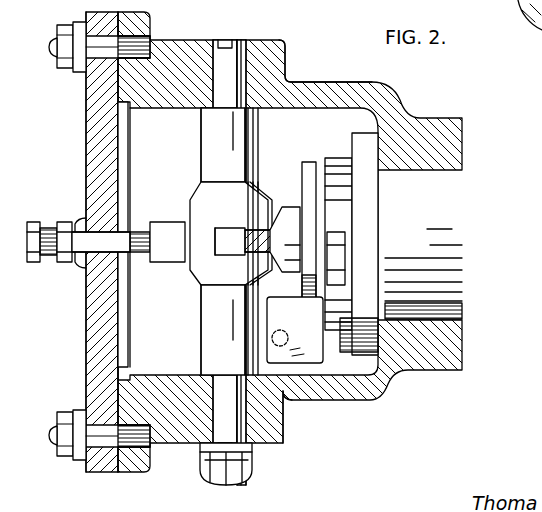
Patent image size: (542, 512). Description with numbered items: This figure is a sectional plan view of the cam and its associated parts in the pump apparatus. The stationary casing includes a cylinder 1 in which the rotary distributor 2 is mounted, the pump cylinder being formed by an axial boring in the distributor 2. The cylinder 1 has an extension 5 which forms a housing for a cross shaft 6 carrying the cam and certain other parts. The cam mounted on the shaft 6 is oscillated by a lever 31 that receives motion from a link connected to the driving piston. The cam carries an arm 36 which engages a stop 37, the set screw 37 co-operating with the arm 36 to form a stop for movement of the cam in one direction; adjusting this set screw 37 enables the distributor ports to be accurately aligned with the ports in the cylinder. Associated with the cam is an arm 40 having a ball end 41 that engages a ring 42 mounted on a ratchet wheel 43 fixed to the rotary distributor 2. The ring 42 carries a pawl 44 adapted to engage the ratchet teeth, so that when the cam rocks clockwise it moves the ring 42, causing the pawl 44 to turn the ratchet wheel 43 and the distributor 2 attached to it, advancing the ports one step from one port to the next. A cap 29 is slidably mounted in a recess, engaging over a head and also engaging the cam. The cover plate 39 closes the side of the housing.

The cylinder 1 is at (452, 145).
The rotary distributor 2 is at (452, 229).
The extension 5 is at (282, 60).
The cross shaft 6 is at (228, 55).
The cap 29 is at (292, 226).
The lever 31 is at (240, 241).
The arm 36 is at (165, 236).
The stop 37 is at (52, 252).
The cover plate 39 is at (100, 170).
The arm 40 is at (265, 340).
The ball end 41 is at (295, 341).
The ring 42 is at (316, 180).
The ratchet wheel 43 is at (340, 175).
The pawl 44 is at (345, 250).